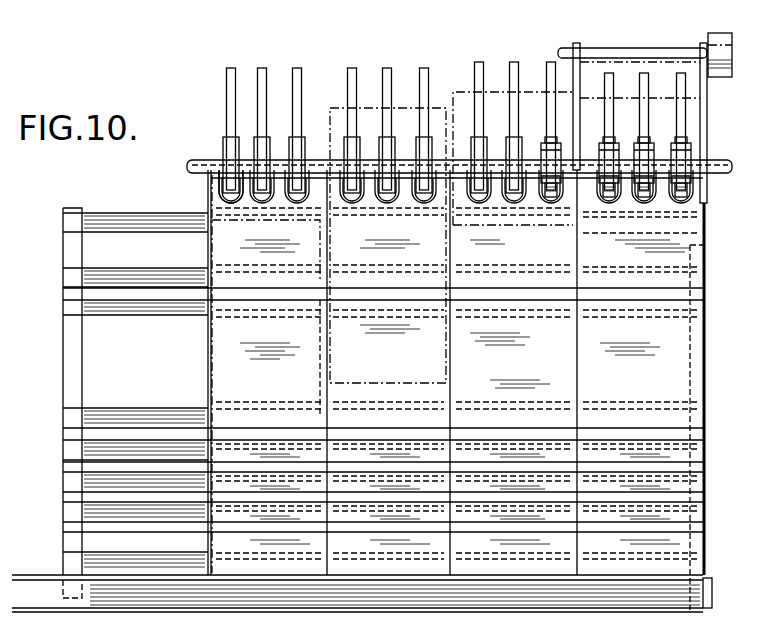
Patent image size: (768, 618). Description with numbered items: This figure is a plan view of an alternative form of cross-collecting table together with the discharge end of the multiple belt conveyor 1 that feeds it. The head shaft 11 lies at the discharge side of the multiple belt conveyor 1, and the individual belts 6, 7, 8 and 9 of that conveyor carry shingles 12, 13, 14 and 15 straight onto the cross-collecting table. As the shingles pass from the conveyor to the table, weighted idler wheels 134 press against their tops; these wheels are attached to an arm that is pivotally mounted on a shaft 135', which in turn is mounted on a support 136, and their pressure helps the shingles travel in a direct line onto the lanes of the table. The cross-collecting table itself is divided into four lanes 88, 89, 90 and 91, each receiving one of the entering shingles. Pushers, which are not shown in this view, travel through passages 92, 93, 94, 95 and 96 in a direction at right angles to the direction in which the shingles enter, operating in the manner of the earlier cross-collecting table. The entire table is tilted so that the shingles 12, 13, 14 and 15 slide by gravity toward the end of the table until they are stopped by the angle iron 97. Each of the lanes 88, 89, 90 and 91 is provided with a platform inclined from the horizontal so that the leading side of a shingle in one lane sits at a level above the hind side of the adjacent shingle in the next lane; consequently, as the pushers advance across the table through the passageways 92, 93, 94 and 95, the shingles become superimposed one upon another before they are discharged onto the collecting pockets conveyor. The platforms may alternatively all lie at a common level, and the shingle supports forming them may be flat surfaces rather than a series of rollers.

The multiple belt conveyor 1 is at (213, 131).
The belt 6 is at (230, 88).
The belt 7 is at (350, 80).
The belt 8 is at (548, 66).
The belt 9 is at (648, 82).
The head shaft 11 is at (722, 174).
The shingle 12 is at (207, 335).
The shingle 13 is at (367, 383).
The shingle 14 is at (503, 228).
The shingle 15 is at (693, 100).
The lane 88 is at (225, 377).
The lane 89 is at (388, 359).
The lane 90 is at (513, 359).
The lane 91 is at (675, 363).
The passage 92 is at (683, 293).
The passage 93 is at (683, 433).
The passage 94 is at (683, 467).
The passage 95 is at (683, 497).
The passage 96 is at (683, 527).
The angle iron 97 is at (708, 592).
The weighted idler wheel 134 is at (543, 147).
The shaft 135' is at (632, 41).
The support 136 is at (723, 70).